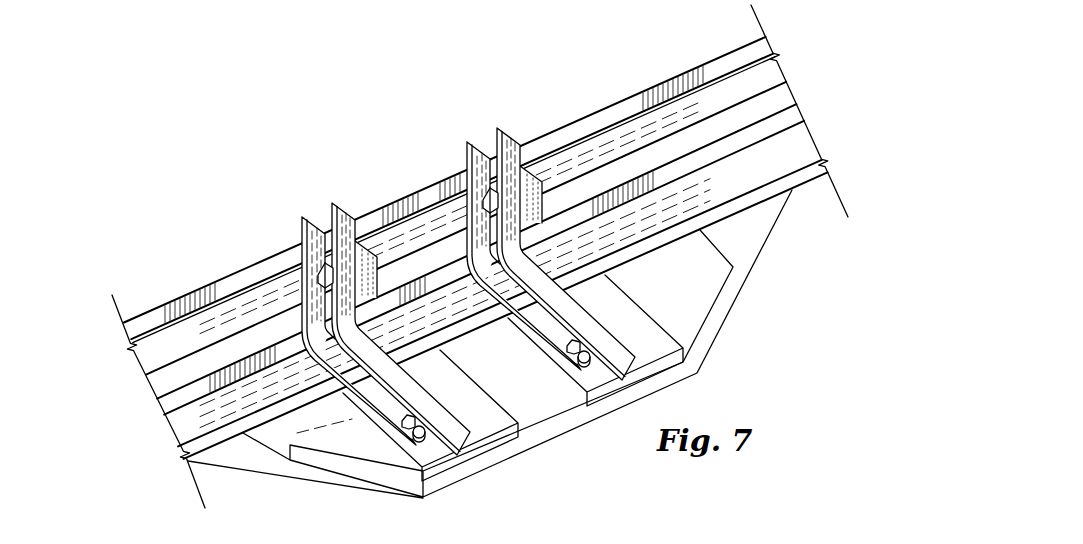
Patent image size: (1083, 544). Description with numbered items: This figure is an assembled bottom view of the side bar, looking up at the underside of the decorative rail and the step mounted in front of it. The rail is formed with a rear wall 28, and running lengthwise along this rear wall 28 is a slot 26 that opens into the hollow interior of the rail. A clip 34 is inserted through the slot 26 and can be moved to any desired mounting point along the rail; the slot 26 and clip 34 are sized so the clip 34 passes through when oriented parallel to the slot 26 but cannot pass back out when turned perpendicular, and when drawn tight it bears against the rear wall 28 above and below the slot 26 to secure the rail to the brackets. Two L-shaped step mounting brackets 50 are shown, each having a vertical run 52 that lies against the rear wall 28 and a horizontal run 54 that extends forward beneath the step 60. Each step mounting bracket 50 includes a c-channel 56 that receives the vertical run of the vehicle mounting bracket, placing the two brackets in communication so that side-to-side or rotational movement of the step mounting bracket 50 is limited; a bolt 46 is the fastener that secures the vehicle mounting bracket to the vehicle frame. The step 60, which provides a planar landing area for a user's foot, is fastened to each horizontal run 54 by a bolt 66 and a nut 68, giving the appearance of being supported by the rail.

The slot 26 is at (697, 117).
The rear wall 28 is at (663, 180).
The clip 34 is at (367, 258).
The bolt 46 is at (326, 276).
The step mounting bracket 50 is at (286, 212).
The vertical run 52 is at (466, 148).
The horizontal run 54 is at (423, 403).
The c-channel 56 is at (323, 225).
The step 60 is at (726, 328).
The bolt 66 is at (414, 441).
The nut 68 is at (401, 422).